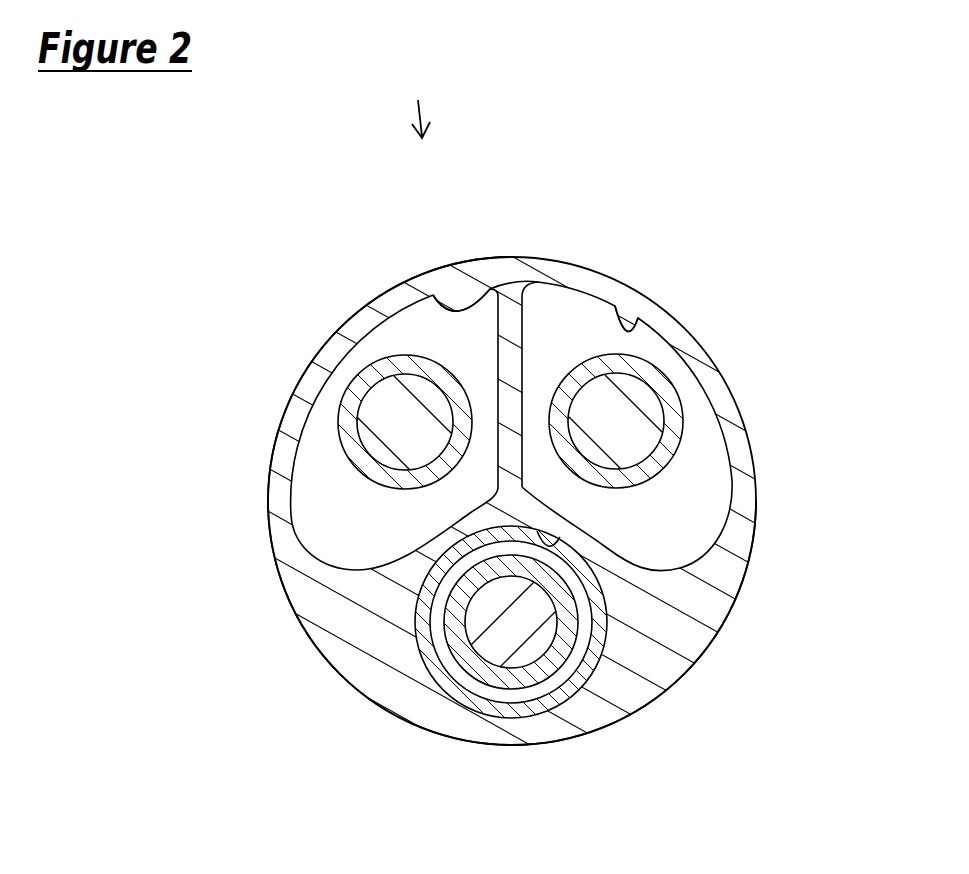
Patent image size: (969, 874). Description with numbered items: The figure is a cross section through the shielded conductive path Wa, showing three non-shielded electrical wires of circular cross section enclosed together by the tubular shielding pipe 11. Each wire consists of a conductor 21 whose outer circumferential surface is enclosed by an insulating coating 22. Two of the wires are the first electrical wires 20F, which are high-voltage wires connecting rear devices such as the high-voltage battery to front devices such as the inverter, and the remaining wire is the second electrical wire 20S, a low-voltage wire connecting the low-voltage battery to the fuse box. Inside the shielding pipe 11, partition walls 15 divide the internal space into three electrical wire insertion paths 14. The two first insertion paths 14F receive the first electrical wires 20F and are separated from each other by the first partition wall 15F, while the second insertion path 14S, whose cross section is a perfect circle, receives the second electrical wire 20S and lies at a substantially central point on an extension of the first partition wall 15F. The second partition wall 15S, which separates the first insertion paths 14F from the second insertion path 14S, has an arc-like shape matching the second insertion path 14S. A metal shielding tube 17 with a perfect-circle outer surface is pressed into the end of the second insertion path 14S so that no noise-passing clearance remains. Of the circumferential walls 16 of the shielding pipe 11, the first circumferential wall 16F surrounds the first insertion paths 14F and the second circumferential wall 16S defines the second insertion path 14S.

The shielded conductive path Wa is at (421, 103).
The shielding pipe 11 is at (727, 583).
The electrical wire insertion paths 14 is at (702, 172).
The first insertion paths 14F is at (445, 306).
The second insertion path 14S is at (555, 542).
The partition walls 15 is at (154, 490).
The first partition wall 15F is at (507, 418).
The second partition wall 15S is at (457, 520).
The circumferential walls 16 is at (737, 413).
The first circumferential wall 16F is at (325, 353).
The second circumferential wall 16S is at (527, 735).
The shielding tube 17 is at (578, 683).
The first electrical wires 20F is at (330, 395).
The second electrical wire 20S is at (472, 628).
The conductor 21 is at (390, 398).
The insulating coating 22 is at (413, 365).